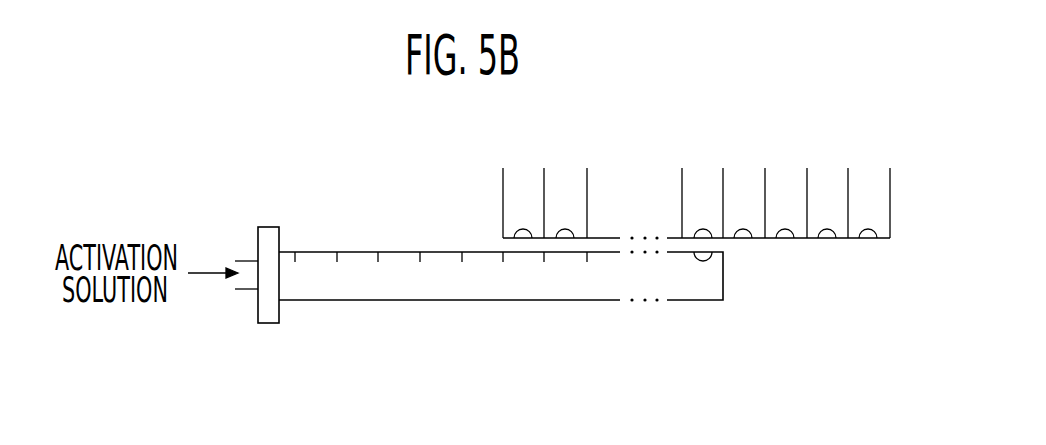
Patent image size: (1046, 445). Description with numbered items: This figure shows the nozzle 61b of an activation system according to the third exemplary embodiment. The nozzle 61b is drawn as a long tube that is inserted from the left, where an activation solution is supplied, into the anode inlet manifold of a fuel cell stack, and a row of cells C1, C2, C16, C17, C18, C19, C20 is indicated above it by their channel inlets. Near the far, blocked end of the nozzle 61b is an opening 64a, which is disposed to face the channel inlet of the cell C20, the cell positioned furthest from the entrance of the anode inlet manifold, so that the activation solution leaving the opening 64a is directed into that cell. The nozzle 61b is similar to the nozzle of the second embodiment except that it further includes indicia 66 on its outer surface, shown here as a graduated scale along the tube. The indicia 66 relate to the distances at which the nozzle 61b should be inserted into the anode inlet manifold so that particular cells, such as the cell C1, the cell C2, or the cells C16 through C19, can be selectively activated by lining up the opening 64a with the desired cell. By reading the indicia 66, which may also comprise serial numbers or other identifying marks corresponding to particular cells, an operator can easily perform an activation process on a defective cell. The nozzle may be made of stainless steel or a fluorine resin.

The nozzle 61b is at (322, 342).
The indicia 66 is at (425, 257).
The opening 64a is at (705, 258).
The cell C1 is at (518, 184).
The cell C2 is at (560, 184).
The cell C16 is at (700, 184).
The cell C17 is at (743, 184).
The cell C18 is at (784, 184).
The cell C19 is at (826, 184).
The cell C20 is at (867, 184).